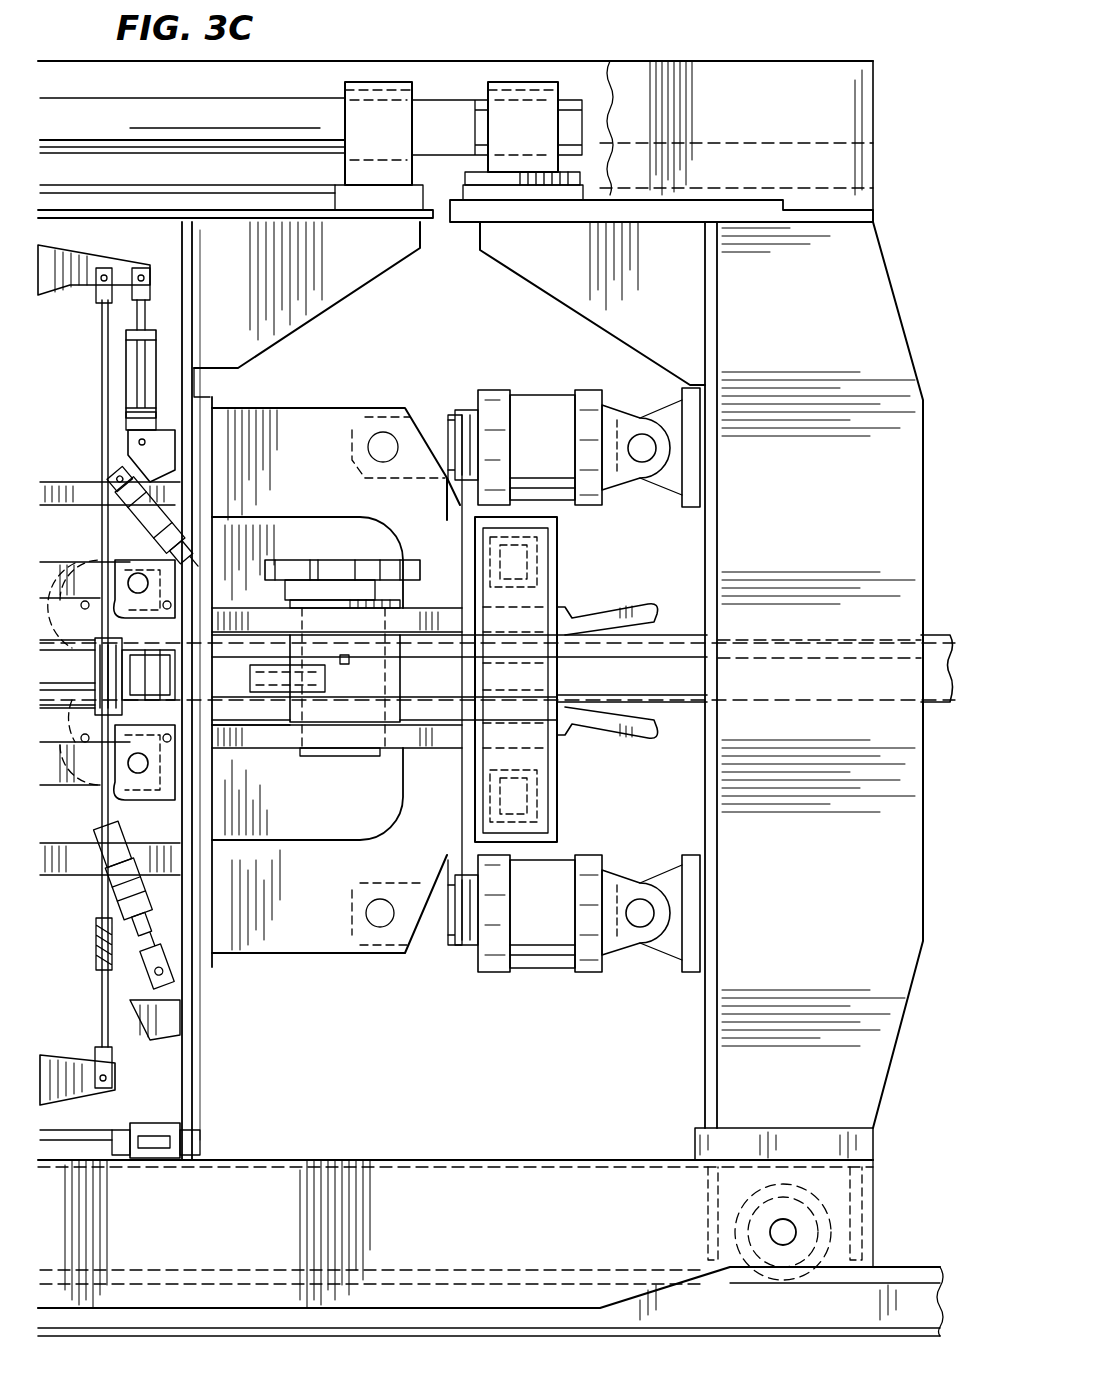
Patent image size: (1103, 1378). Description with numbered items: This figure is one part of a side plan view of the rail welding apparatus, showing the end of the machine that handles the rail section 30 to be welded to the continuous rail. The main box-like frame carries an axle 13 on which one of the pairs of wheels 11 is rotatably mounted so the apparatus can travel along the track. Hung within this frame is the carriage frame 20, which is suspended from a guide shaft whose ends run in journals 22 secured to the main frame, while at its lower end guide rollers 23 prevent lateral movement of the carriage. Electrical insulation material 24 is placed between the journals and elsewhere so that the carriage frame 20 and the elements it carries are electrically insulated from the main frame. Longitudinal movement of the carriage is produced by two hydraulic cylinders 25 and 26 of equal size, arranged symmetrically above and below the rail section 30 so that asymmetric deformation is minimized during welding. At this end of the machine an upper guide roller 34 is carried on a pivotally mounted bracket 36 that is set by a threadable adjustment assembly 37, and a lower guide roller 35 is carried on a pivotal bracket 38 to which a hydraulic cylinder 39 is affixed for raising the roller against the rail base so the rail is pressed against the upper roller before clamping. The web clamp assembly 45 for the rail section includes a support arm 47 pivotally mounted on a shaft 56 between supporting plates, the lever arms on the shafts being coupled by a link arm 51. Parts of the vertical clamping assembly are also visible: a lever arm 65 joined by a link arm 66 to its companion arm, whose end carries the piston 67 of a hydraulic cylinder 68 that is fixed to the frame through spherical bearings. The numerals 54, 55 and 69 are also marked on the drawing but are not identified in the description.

The wheels 11 is at (768, 1270).
The axle 13 is at (790, 1245).
The carriage frame 20 is at (350, 300).
The journals 22 is at (388, 82).
The guide rollers 23 is at (160, 1130).
The electrical insulation material 24 is at (468, 200).
The hydraulic cylinder 25 is at (546, 392).
The hydraulic cylinder 26 is at (535, 972).
The rail section 30 is at (805, 640).
The upper guide roller 34 is at (76, 563).
The lower guide roller 35 is at (86, 785).
The pivotally mounted bracket 36 is at (100, 540).
The threadable adjustment assembly 37 is at (136, 514).
The pivotal bracket 38 is at (128, 795).
The hydraulic cylinder 39 is at (110, 905).
The web clamp assembly 45 is at (581, 550).
The support arm 47 is at (440, 676).
The link arm 51 is at (335, 560).
The bearing housing 54 is at (248, 610).
The lower bearing 55 is at (260, 750).
The shaft 56 is at (325, 756).
The lever arm 65 is at (78, 1065).
The link arm 66 is at (100, 340).
The piston 67 is at (150, 315).
The hydraulic cylinder 68 is at (150, 370).
The cylinder bracket 69 is at (165, 440).